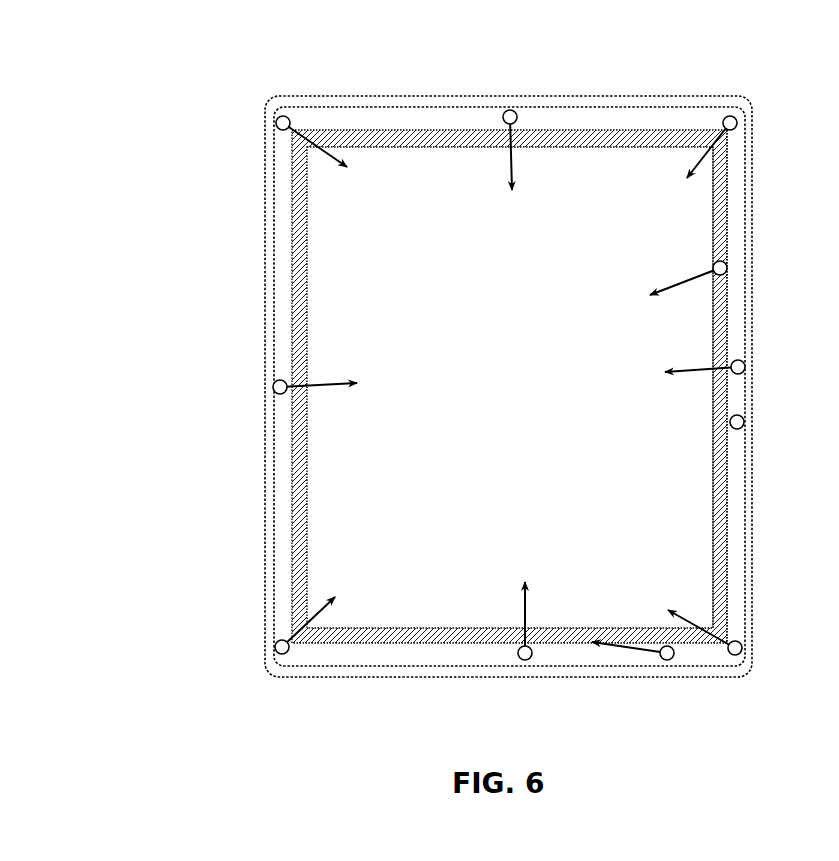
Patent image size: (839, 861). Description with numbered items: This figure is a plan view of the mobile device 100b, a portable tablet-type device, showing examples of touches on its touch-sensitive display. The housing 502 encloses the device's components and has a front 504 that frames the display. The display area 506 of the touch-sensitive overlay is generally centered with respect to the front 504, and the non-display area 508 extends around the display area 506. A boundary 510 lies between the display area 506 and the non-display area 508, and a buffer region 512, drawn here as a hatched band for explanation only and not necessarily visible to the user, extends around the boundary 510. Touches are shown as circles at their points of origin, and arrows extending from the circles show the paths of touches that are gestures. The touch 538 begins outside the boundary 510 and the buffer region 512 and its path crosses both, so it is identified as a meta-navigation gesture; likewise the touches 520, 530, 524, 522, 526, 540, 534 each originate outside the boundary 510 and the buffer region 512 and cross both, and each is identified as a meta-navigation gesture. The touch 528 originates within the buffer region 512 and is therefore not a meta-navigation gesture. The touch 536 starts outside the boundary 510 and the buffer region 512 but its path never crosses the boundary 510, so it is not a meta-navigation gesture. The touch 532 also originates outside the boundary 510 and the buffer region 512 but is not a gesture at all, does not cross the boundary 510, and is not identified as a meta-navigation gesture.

The mobile device 100b is at (160, 47).
The housing 502 is at (387, 97).
The front 504 is at (613, 99).
The display area 506 is at (672, 240).
The non-display area 508 is at (732, 540).
The boundary 510 is at (725, 490).
The buffer region 512 is at (551, 386).
The touch 520 is at (271, 384).
The touch 522 is at (293, 116).
The touch 524 is at (516, 110).
The touch 526 is at (740, 115).
The touch 528 is at (727, 263).
The touch 530 is at (745, 360).
The touch 532 is at (745, 412).
The touch 534 is at (745, 633).
The touch 536 is at (667, 662).
The touch 538 is at (525, 662).
The touch 540 is at (284, 656).